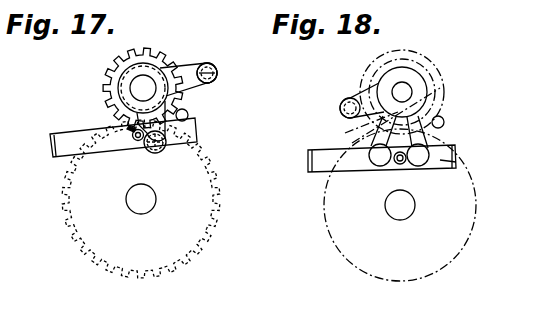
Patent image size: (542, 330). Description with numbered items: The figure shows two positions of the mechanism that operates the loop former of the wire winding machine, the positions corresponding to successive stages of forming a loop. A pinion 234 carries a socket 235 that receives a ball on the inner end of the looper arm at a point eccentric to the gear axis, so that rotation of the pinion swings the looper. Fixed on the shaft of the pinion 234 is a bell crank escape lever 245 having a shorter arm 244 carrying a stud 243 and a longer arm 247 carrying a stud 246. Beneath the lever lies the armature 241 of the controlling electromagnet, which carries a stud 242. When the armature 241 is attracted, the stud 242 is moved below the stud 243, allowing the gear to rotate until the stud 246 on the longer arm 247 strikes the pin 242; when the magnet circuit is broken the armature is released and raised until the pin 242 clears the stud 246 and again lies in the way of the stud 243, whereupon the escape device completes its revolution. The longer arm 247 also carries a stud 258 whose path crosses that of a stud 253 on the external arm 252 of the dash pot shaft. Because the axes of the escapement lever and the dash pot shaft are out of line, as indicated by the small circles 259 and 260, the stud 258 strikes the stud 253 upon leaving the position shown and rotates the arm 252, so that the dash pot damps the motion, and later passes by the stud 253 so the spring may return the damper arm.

In FIG. 17, the pinion 234 is at (141, 52).
In FIG. 18, the pinion 234 is at (432, 78).
In FIG. 17, the socket 235 is at (123, 277).
In FIG. 18, the socket 235 is at (361, 277).
In FIG. 17, the armature 241 is at (72, 136).
In FIG. 18, the armature 241 is at (325, 162).
In FIG. 17, the stud 242 is at (135, 138).
In FIG. 18, the stud 242 is at (401, 164).
In FIG. 17, the stud 243 is at (161, 153).
In FIG. 18, the stud 243 is at (345, 106).
In FIG. 17, the arm 244 is at (151, 146).
In FIG. 17, the bell crank escape lever 245 is at (156, 68).
In FIG. 17, the stud 246 is at (210, 84).
In FIG. 18, the stud 246 is at (418, 167).
In FIG. 17, the longer arm 247 is at (208, 63).
In FIG. 18, the longer arm 247 is at (456, 151).
In FIG. 18, the external arm 252 is at (362, 130).
In FIG. 18, the stud 253 is at (378, 167).
In FIG. 17, the stud 258 is at (218, 73).
In FIG. 18, the stud 258 is at (440, 167).
In FIG. 18, the small circle 259 is at (400, 95).
In FIG. 18, the small circle 260 is at (408, 72).